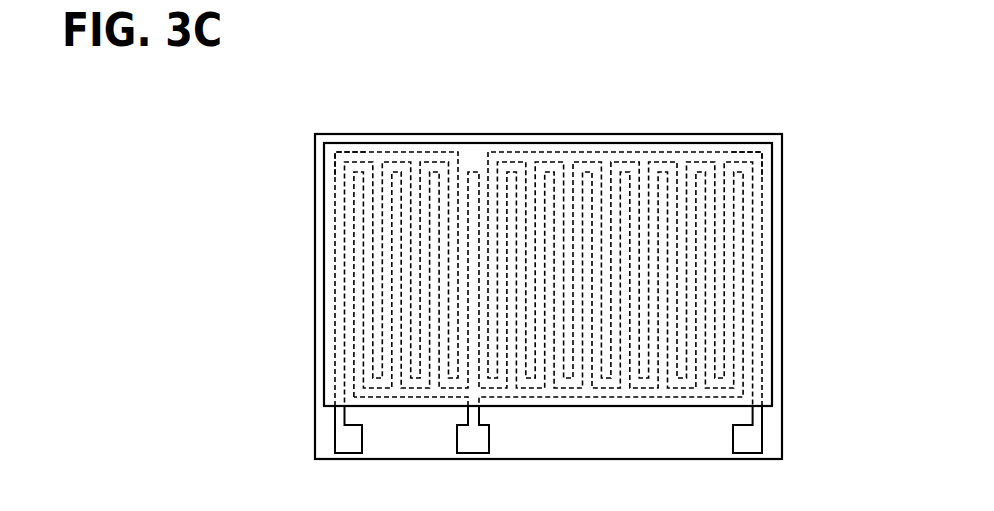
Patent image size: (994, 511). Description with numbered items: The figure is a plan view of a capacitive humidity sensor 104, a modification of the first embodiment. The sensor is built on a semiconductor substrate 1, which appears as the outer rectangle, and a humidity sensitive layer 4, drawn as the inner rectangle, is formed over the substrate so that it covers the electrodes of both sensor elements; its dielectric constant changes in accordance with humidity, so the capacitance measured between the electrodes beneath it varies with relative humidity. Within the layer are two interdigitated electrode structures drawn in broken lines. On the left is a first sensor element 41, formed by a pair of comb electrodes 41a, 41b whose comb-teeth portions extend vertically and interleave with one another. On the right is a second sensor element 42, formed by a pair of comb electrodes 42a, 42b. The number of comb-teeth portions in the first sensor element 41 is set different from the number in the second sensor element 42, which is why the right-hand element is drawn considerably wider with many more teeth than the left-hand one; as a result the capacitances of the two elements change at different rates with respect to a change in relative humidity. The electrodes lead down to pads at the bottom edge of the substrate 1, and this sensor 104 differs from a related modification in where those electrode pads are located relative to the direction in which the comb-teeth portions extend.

The capacitive humidity sensor 104 is at (299, 109).
The semiconductor substrate 1 is at (629, 437).
The humidity sensitive layer 4 is at (766, 191).
The first sensor element 41 is at (458, 124).
The comb electrode 41a is at (348, 156).
The comb electrode 41b is at (372, 388).
The second sensor element 42 is at (762, 124).
The comb electrode 42a is at (750, 155).
The comb electrode 42b is at (726, 388).